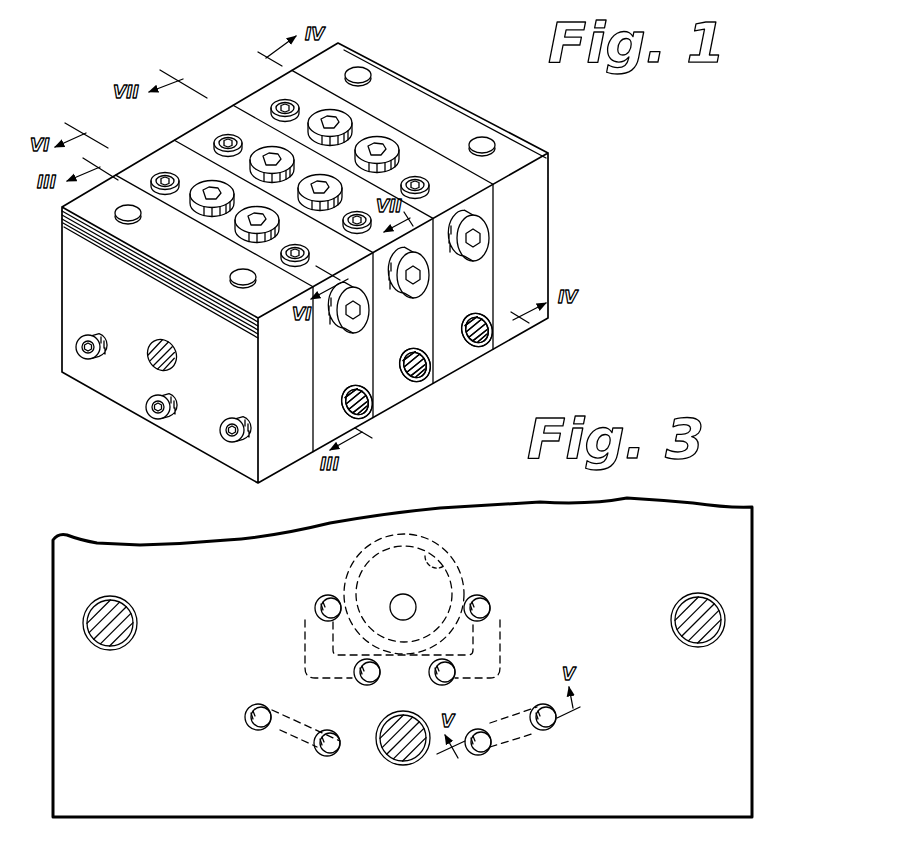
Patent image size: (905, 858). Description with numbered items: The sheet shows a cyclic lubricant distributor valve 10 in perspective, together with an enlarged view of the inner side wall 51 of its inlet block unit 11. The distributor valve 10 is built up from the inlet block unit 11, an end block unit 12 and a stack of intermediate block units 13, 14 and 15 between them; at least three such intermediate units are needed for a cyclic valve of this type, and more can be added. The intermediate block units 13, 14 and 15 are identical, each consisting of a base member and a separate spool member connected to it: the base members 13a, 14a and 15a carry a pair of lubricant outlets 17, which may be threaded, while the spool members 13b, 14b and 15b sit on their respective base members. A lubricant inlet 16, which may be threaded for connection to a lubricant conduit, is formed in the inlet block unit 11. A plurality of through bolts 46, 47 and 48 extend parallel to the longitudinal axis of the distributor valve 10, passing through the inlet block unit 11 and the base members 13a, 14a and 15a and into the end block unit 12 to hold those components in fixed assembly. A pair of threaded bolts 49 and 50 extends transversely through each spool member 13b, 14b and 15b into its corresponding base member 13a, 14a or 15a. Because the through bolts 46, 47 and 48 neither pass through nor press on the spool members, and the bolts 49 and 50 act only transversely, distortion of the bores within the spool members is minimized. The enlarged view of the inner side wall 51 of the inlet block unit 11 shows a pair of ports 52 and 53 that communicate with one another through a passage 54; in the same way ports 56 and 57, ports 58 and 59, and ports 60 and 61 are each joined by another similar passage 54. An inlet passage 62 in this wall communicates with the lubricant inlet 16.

In FIG. 1, the cyclic lubricant distributor valve 10 is at (213, 86).
In FIG. 1, the inlet block unit 11 is at (138, 420).
In FIG. 3, the inlet block unit 11 is at (755, 706).
In FIG. 1, the end block unit 12 is at (551, 212).
In FIG. 1, the intermediate block unit 13 is at (325, 390).
In FIG. 1, the base member 13a is at (319, 441).
In FIG. 1, the spool member 13b is at (320, 328).
In FIG. 1, the intermediate block unit 14 is at (401, 346).
In FIG. 1, the base member 14a is at (385, 384).
In FIG. 1, the spool member 14b is at (423, 231).
In FIG. 1, the intermediate block unit 15 is at (462, 308).
In FIG. 1, the base member 15a is at (448, 349).
In FIG. 1, the spool member 15b is at (482, 271).
In FIG. 1, the lubricant inlet 16 is at (176, 352).
In FIG. 3, the lubricant inlet 16 is at (455, 561).
In FIG. 1, the lubricant outlets 17 is at (493, 343).
In FIG. 1, the through bolt 46 is at (83, 360).
In FIG. 3, the through bolt 46 is at (685, 633).
In FIG. 1, the through bolt 47 is at (164, 420).
In FIG. 3, the through bolt 47 is at (400, 758).
In FIG. 1, the through bolt 48 is at (225, 444).
In FIG. 3, the through bolt 48 is at (108, 645).
In FIG. 1, the threaded bolt 49 is at (283, 101).
In FIG. 1, the threaded bolt 50 is at (438, 143).
In FIG. 3, the inner side wall 51 is at (150, 753).
In FIG. 3, the port 52 is at (474, 755).
In FIG. 3, the port 53 is at (556, 727).
In FIG. 3, the passage 54 is at (303, 645).
In FIG. 3, the port 56 is at (443, 685).
In FIG. 3, the port 57 is at (491, 606).
In FIG. 3, the port 58 is at (315, 607).
In FIG. 3, the port 59 is at (366, 685).
In FIG. 3, the port 60 is at (252, 724).
In FIG. 3, the port 61 is at (321, 756).
In FIG. 3, the inlet passage 62 is at (396, 598).